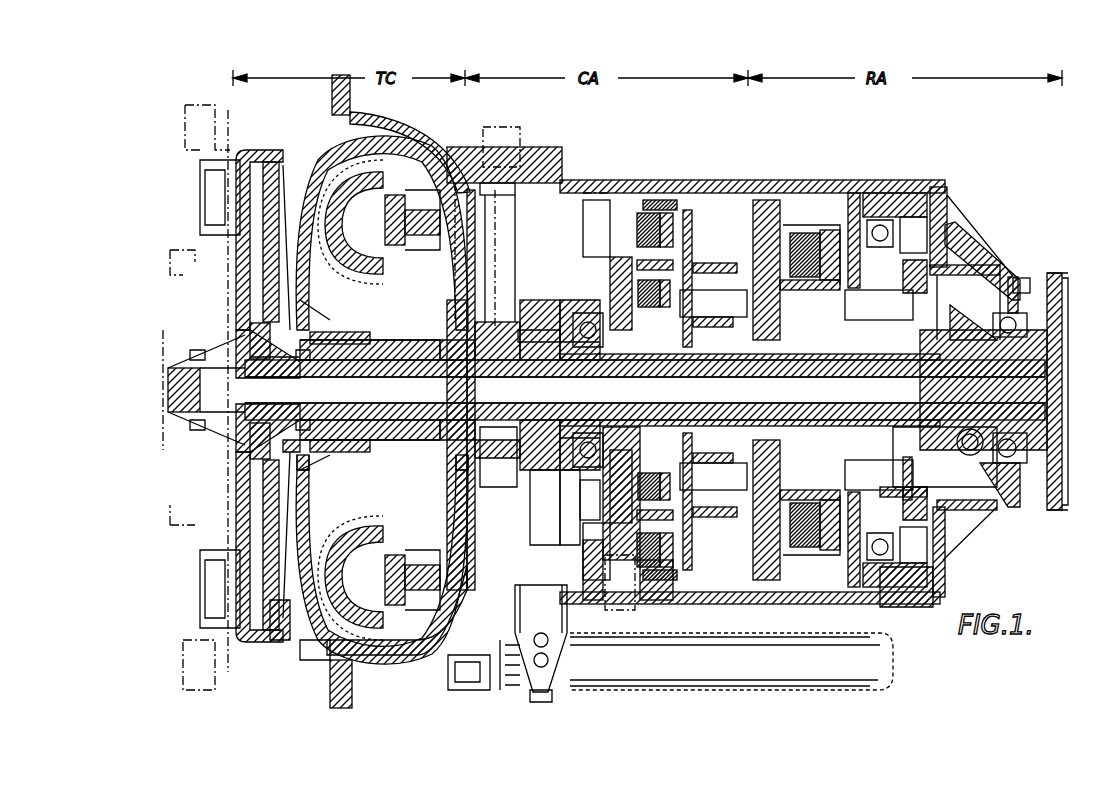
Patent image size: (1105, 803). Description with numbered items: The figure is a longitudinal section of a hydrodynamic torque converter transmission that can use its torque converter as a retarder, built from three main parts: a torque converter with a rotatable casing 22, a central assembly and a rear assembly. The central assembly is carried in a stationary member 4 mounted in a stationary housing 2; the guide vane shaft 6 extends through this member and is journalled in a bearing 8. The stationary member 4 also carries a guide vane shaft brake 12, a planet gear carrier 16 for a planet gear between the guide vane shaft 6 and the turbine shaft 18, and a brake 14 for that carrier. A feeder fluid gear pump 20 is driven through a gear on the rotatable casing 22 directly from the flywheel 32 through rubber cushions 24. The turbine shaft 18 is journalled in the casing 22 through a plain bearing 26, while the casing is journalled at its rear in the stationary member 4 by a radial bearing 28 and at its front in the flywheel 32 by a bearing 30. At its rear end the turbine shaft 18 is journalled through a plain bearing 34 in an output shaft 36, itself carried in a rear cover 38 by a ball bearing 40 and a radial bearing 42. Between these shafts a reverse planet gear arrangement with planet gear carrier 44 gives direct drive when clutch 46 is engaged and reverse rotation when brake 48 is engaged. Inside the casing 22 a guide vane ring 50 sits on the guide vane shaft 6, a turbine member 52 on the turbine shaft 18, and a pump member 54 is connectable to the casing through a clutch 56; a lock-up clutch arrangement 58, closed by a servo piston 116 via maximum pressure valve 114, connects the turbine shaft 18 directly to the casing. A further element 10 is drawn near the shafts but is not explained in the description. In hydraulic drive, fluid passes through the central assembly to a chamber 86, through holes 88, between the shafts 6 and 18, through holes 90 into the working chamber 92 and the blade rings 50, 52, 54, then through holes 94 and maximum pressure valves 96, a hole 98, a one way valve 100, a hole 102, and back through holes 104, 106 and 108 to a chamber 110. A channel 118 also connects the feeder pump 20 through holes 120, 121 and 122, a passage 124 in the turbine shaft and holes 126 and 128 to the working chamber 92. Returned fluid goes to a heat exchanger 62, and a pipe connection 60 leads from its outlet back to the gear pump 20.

The stationary housing 2 is at (495, 740).
The stationary member 4 is at (645, 180).
The guide vane shaft 6 is at (645, 390).
The bearing 8 is at (618, 400).
The hub sleeve 10 is at (370, 390).
The guide vane shaft brake 12 is at (680, 468).
The brake 14 is at (680, 580).
The planet gear carrier 16 is at (690, 260).
The turbine shaft 18 is at (462, 412).
The feeder fluid gear pump 20 is at (592, 493).
The rotatable casing 22 is at (240, 283).
The rubber cushions 24 is at (208, 552).
The plain bearing 26 is at (224, 390).
The radial bearing 28 is at (500, 330).
The bearing 30 is at (190, 355).
The flywheel 32 is at (188, 275).
The plain bearing 34 is at (1050, 400).
The output shaft 36 is at (970, 408).
The rear cover 38 is at (978, 272).
The ball bearing 40 is at (1027, 312).
The radial bearing 42 is at (940, 320).
The planet gear carrier 44 is at (879, 389).
The clutch 46 is at (800, 240).
The brake 48 is at (865, 180).
The guide vane ring 50 is at (412, 580).
The turbine member 52 is at (382, 559).
The pump member 54 is at (349, 578).
The clutch 56 is at (322, 670).
The lock-up clutch arrangement 58 is at (278, 636).
The pipe connection 60 is at (507, 643).
The heat exchanger 62 is at (731, 661).
The chamber 86 is at (536, 330).
The holes 88 is at (497, 415).
The holes 90 is at (380, 325).
The working chamber 92 is at (382, 233).
The holes 94 is at (325, 332).
The maximum pressure valves 96 is at (305, 335).
The hole 98 is at (300, 466).
The one way valve 100 is at (290, 450).
The hole 102 is at (312, 390).
The holes 104 is at (575, 390).
The holes 106 is at (575, 421).
The holes 108 is at (501, 436).
The chamber 110 is at (571, 507).
The maximum pressure valve 114 is at (273, 391).
The servo piston 116 is at (300, 545).
The channel 118 is at (545, 507).
The holes 120 is at (533, 330).
The holes 121 is at (556, 330).
The holes 122 is at (539, 421).
The passage 124 is at (457, 365).
The holes 126 is at (370, 390).
The holes 128 is at (275, 373).